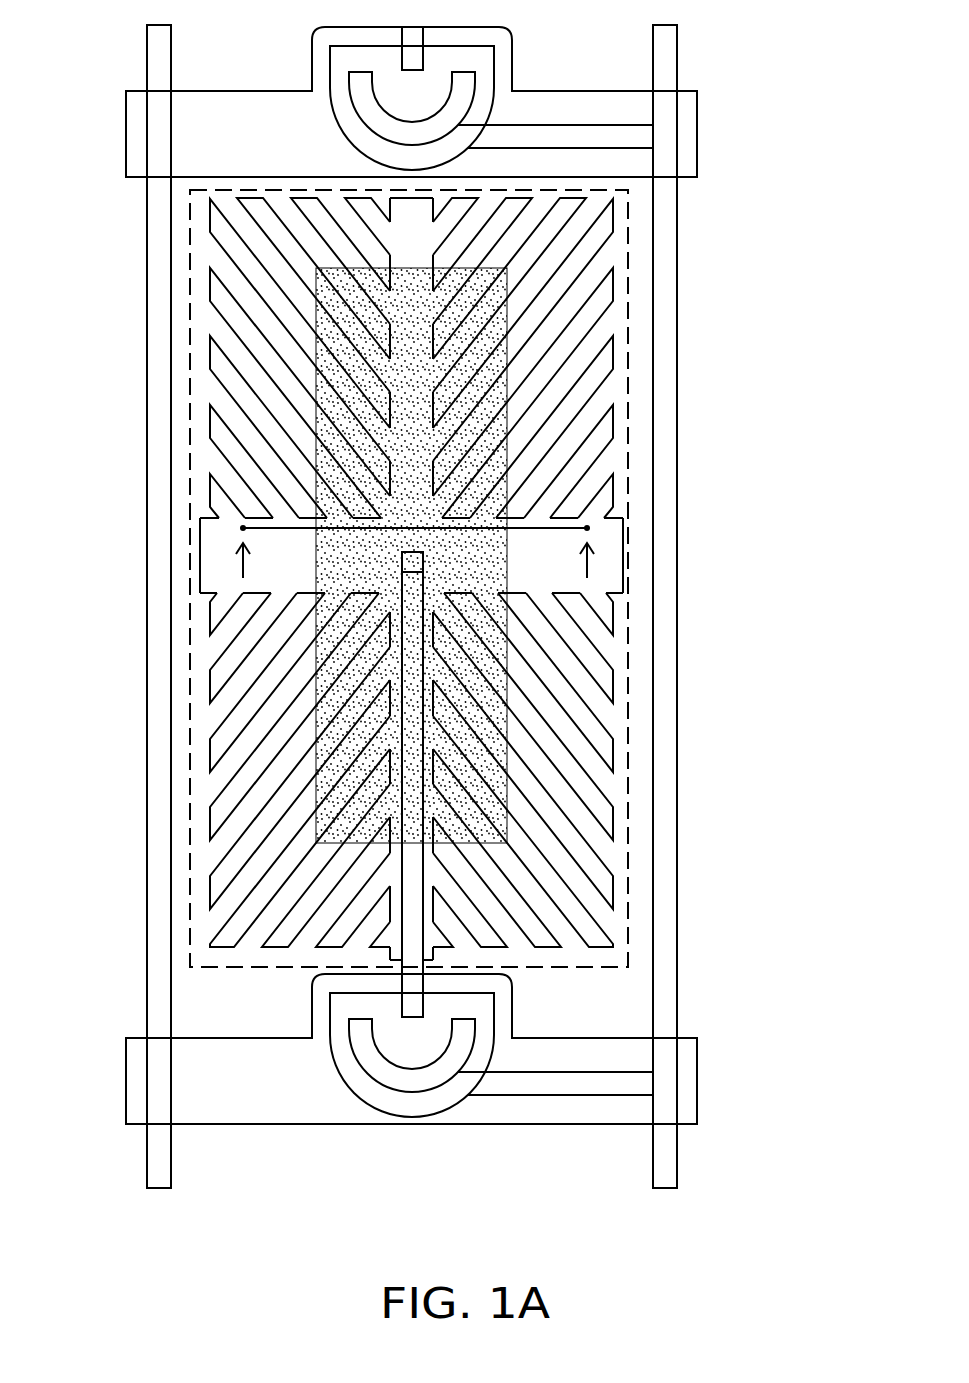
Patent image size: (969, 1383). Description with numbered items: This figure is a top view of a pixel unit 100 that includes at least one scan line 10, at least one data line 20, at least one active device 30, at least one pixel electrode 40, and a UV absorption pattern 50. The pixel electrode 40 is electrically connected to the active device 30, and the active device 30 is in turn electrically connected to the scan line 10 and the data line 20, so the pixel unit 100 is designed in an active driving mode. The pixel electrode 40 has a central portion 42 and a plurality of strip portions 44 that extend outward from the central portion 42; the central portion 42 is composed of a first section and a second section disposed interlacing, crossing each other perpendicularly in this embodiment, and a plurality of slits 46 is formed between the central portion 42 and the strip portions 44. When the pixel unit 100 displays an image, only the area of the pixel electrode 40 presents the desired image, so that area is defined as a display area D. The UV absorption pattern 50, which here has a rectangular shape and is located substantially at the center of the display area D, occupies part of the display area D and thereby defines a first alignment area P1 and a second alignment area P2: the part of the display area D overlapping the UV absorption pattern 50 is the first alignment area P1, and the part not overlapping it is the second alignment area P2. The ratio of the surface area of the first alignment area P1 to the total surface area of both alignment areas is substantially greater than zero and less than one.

The scan line 10 is at (695, 1068).
The data line 20 is at (677, 1144).
The active device 30 is at (327, 1094).
The pixel electrode 40 is at (390, 579).
The central portion 42 is at (68, 873).
The strip portions 44 is at (233, 787).
The slits 46 is at (237, 835).
The UV absorption pattern 50 is at (503, 660).
The pixel unit 100 is at (798, 1254).
The first alignment area P1 is at (508, 423).
The second alignment area P2 is at (632, 348).
The display area D is at (500, 578).